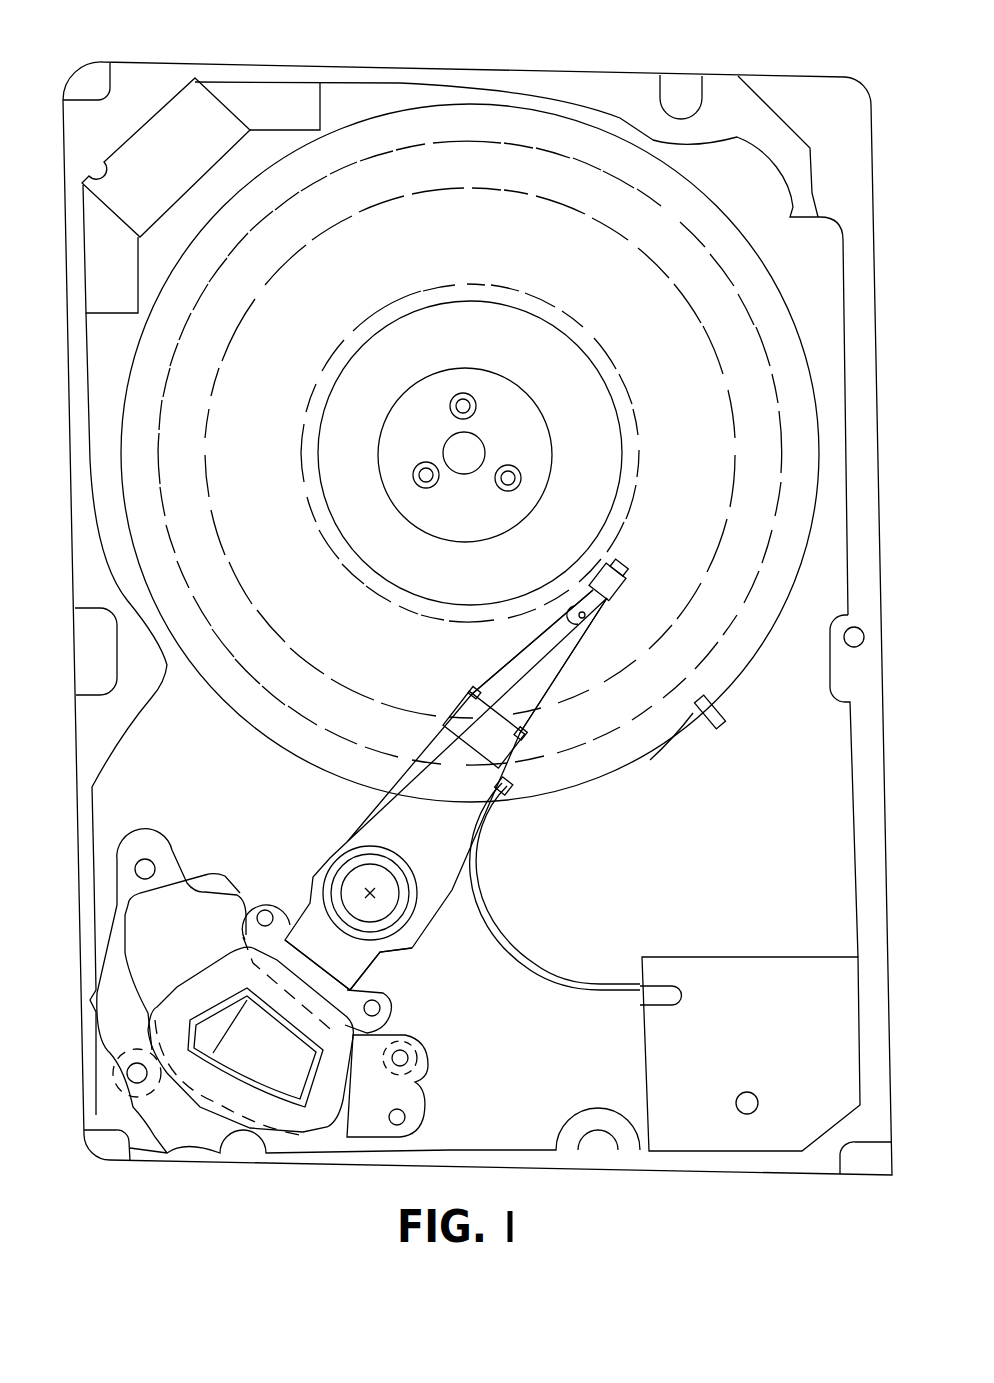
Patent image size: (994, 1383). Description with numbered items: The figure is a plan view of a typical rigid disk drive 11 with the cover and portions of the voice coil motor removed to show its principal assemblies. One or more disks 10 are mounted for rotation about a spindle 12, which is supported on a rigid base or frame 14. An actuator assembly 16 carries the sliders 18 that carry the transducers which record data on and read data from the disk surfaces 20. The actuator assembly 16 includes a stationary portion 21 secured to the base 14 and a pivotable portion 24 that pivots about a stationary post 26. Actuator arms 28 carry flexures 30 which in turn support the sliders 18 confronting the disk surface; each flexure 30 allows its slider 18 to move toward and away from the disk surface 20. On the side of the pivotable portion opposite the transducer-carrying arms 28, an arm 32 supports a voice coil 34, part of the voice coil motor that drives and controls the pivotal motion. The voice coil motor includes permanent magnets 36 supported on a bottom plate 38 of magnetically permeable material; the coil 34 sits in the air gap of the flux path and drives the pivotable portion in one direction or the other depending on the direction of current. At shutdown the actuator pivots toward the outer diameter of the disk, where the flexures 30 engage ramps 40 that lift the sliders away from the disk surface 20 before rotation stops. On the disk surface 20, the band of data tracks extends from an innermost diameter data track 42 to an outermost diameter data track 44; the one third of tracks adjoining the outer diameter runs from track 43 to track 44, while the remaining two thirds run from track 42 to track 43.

The disk 10 is at (511, 97).
The rigid disk drive 11 is at (203, 45).
The spindle 12 is at (437, 393).
The base or frame 14 is at (65, 215).
The actuator assembly 16 is at (333, 837).
The slider 18 is at (626, 597).
The disk surface 20 is at (653, 690).
The stationary portion 21 is at (195, 888).
The pivotable portion 24 is at (503, 793).
The stationary post 26 is at (378, 880).
The actuator arm 28 is at (440, 742).
The flexure 30 is at (547, 693).
The arm 32 is at (375, 967).
The voice coil 34 is at (302, 1125).
The permanent magnet 36 is at (292, 1067).
The bottom plate 38 is at (420, 1113).
The ramp 40 is at (722, 703).
The innermost diameter data track 42 is at (583, 326).
The track 43 is at (683, 290).
The outermost diameter data track 44 is at (668, 200).